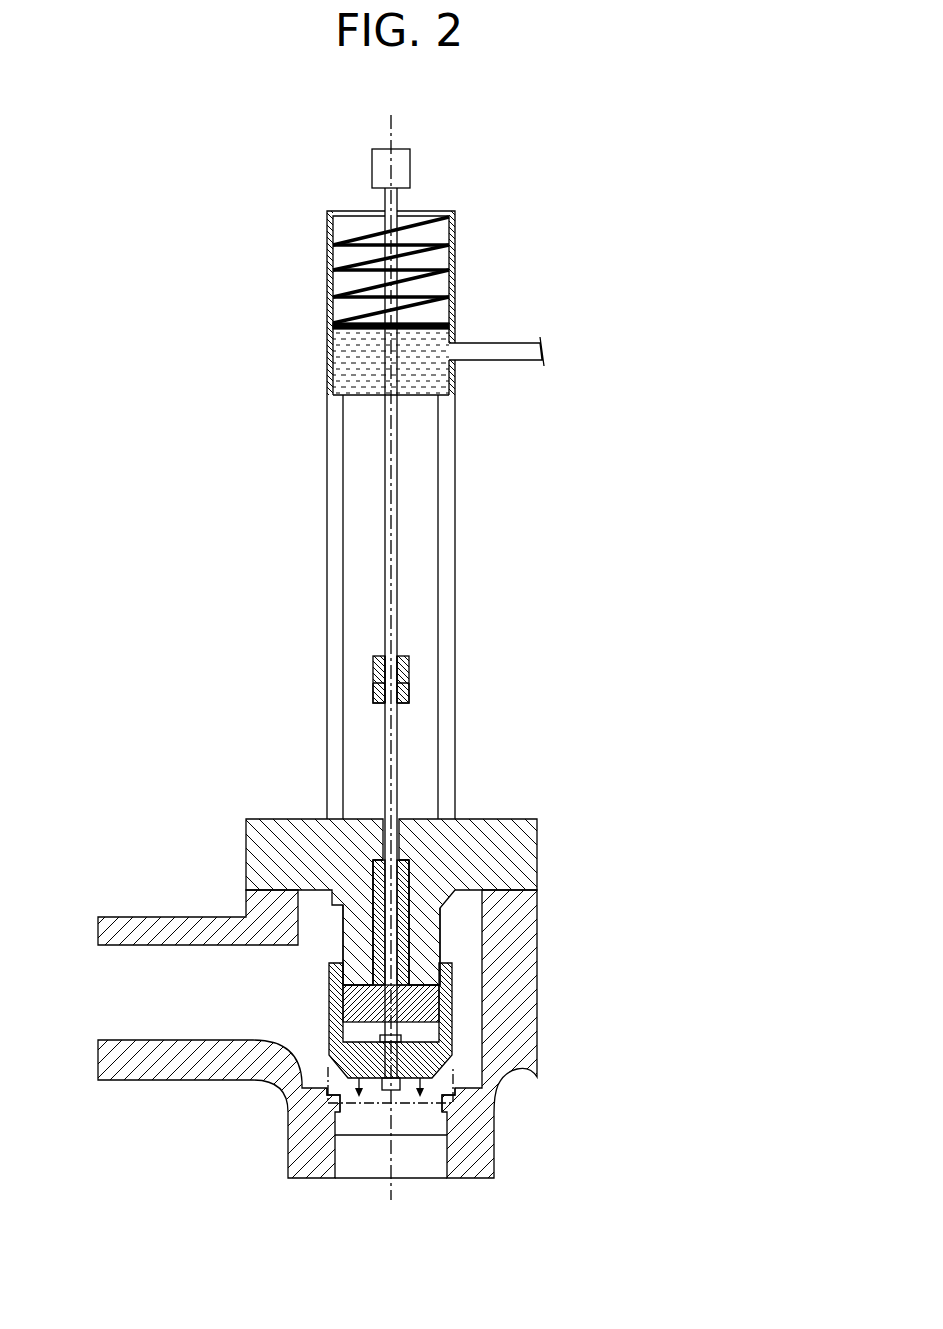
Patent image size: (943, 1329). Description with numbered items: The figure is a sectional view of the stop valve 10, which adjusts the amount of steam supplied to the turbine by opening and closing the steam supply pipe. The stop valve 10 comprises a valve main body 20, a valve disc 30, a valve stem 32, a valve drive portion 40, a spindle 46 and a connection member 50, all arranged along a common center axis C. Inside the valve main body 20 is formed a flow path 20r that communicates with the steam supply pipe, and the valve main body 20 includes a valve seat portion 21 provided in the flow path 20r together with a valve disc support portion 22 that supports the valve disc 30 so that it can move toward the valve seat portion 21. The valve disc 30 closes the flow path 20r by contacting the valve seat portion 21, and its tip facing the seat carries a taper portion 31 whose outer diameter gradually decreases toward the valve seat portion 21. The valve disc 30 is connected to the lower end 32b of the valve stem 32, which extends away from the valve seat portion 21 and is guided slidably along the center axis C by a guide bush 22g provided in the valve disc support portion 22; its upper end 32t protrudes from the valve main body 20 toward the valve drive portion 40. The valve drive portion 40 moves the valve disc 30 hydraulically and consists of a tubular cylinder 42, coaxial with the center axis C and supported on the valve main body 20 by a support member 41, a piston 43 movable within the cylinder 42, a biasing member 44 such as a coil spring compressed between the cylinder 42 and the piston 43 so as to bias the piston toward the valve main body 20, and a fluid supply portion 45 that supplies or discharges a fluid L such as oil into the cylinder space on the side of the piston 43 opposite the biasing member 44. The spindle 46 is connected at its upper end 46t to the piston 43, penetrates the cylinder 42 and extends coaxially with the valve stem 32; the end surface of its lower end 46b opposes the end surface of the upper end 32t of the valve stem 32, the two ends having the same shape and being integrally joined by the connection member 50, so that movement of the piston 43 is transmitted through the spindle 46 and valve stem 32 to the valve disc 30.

The stop valve 10 is at (100, 218).
The valve drive portion 40 is at (466, 296).
The support member 41 is at (327, 555).
The cylinder 42 is at (325, 258).
The piston 43 is at (328, 345).
The biasing member 44 is at (428, 245).
The fluid supply portion 45 is at (520, 343).
The spindle 46 is at (397, 457).
The rod upper end 46t is at (443, 377).
The lower end 46b is at (397, 667).
The fluid L is at (325, 383).
The connection member 50 is at (373, 683).
The valve stem 32 is at (397, 797).
The upper end 32t is at (397, 688).
The lower end 32b is at (386, 1092).
The center axis C is at (391, 752).
The valve main body 20 is at (548, 887).
The valve disc support portion 22 is at (440, 930).
The guide bush 22g is at (412, 957).
The valve disc 30 is at (466, 1027).
The taper portion 31 is at (290, 1098).
The valve seat portion 21 is at (543, 1077).
The flow path 20r is at (432, 1180).